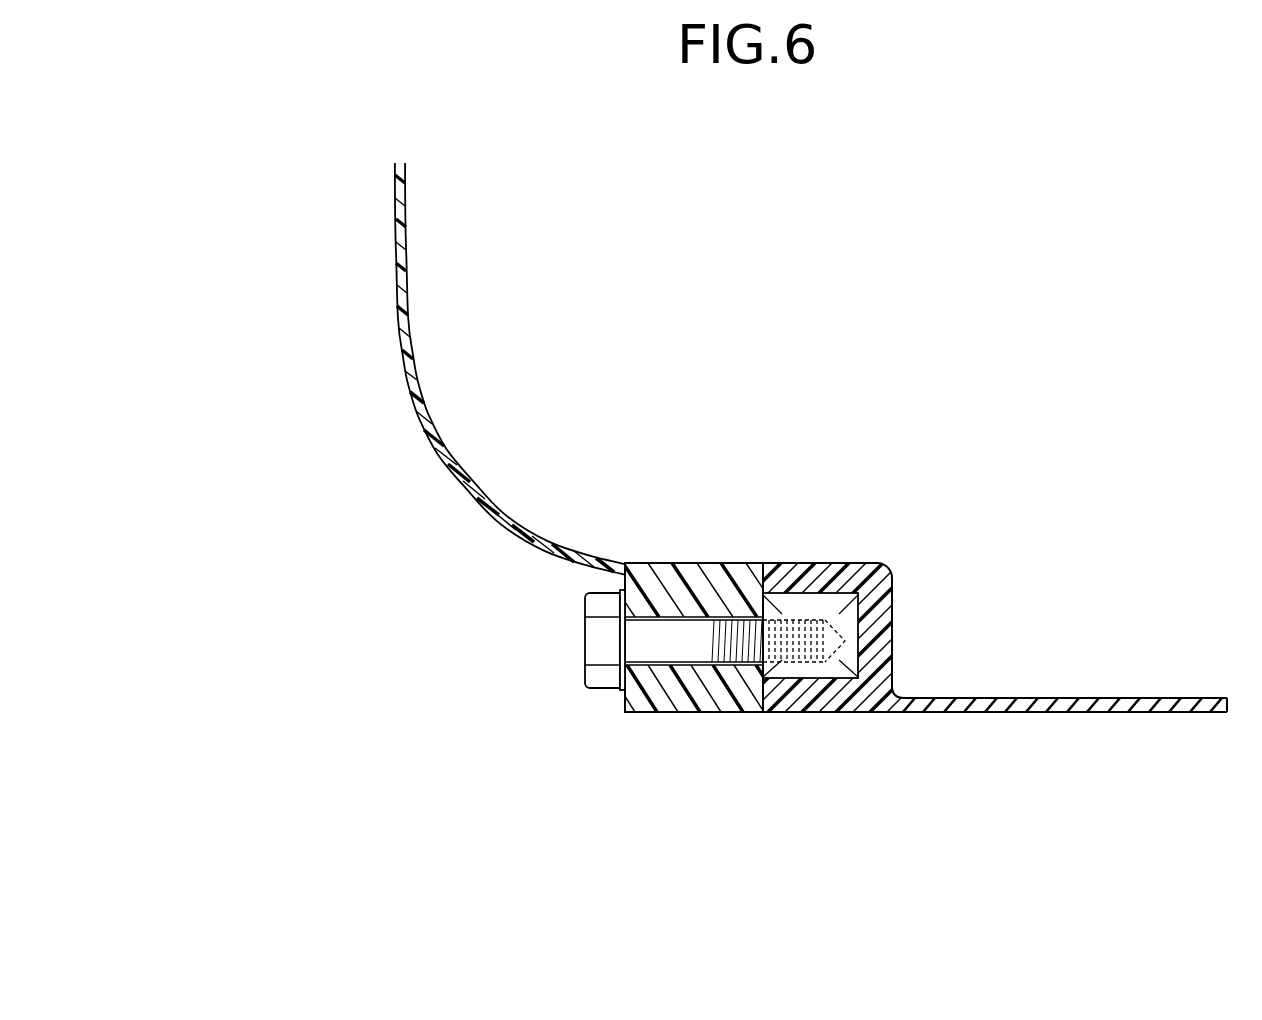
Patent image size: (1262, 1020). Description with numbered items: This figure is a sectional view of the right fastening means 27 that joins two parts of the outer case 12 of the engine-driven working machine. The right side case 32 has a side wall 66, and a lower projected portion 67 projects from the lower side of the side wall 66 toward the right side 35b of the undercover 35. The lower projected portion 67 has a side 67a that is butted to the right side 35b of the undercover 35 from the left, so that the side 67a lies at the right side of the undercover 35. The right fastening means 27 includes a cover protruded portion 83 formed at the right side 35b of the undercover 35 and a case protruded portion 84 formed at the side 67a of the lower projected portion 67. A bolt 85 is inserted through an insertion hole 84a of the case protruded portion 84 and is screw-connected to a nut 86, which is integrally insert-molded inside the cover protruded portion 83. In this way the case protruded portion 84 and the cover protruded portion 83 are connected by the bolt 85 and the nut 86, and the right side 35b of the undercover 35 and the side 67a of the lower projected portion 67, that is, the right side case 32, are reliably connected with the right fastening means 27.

The outer case 12 is at (380, 285).
The right side case 32 is at (405, 348).
The side wall 66 is at (407, 230).
The lower projected portion 67 is at (622, 563).
The side 67a is at (715, 703).
The case protruded portion 84 is at (703, 563).
The insertion hole 84a is at (708, 619).
The bolt 85 is at (584, 640).
The nut 86 is at (852, 612).
The cover protruded portion 83 is at (855, 563).
The right fastening means 27 is at (828, 520).
The undercover 35 is at (1152, 697).
The right side 35b is at (905, 712).